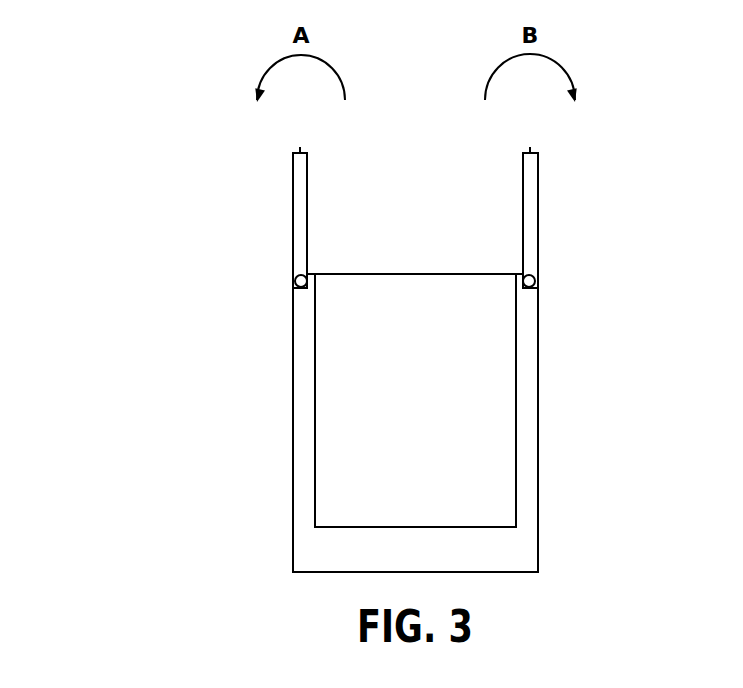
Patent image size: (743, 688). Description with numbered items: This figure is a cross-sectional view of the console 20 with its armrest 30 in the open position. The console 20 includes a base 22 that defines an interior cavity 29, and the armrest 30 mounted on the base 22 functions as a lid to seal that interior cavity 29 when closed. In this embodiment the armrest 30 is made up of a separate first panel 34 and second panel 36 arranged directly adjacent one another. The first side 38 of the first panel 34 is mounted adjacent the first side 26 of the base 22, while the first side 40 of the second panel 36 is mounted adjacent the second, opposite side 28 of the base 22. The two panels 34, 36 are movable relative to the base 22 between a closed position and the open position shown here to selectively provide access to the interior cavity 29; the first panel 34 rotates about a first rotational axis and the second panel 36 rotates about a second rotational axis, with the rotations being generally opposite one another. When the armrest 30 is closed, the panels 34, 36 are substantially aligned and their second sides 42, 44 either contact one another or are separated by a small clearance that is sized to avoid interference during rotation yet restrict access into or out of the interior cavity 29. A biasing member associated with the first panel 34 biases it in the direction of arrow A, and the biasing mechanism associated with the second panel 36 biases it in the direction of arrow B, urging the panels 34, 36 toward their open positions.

The console 20 is at (210, 175).
The base 22 is at (582, 398).
The first side of the base 26 is at (293, 488).
The second side of the base 28 is at (538, 488).
The interior cavity 29 is at (357, 380).
The armrest 30 is at (620, 176).
The first panel 34 is at (300, 220).
The second panel 36 is at (532, 218).
The first side of the first panel 38 is at (300, 266).
The first side of the second panel 40 is at (533, 267).
The second side of the first panel 42 is at (300, 153).
The second side of the second panel 44 is at (530, 153).